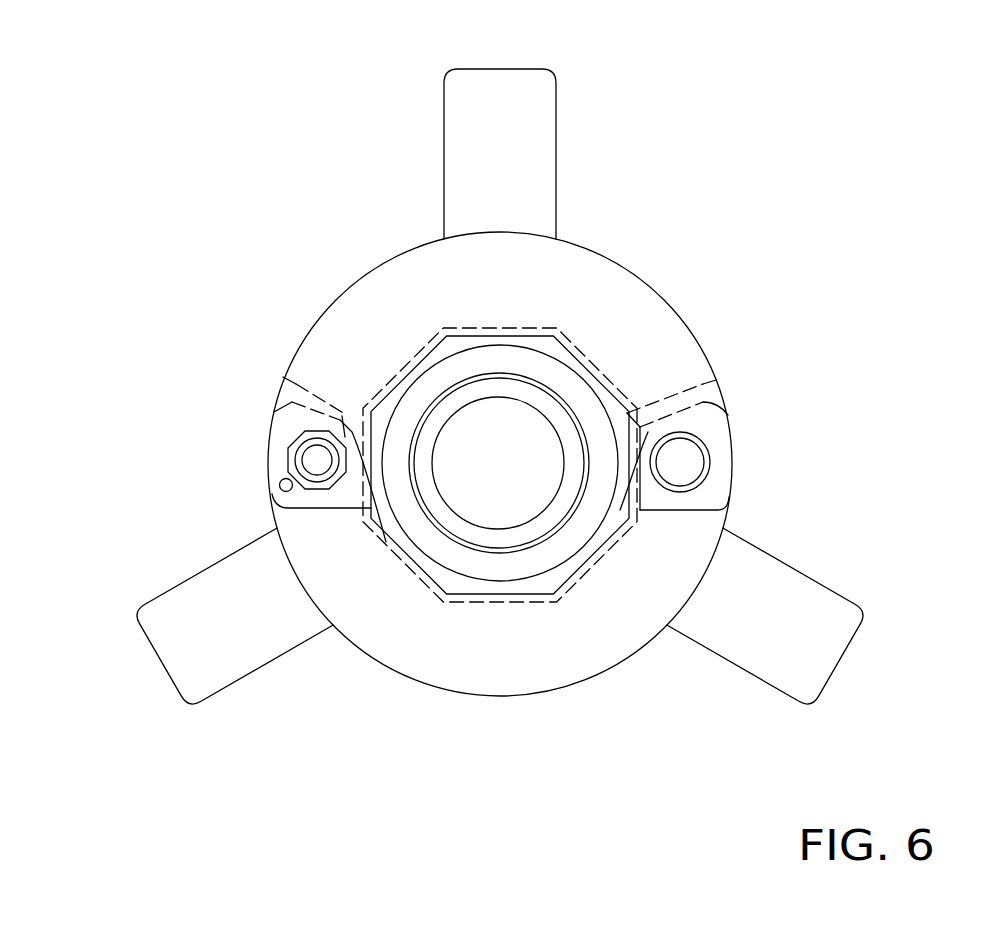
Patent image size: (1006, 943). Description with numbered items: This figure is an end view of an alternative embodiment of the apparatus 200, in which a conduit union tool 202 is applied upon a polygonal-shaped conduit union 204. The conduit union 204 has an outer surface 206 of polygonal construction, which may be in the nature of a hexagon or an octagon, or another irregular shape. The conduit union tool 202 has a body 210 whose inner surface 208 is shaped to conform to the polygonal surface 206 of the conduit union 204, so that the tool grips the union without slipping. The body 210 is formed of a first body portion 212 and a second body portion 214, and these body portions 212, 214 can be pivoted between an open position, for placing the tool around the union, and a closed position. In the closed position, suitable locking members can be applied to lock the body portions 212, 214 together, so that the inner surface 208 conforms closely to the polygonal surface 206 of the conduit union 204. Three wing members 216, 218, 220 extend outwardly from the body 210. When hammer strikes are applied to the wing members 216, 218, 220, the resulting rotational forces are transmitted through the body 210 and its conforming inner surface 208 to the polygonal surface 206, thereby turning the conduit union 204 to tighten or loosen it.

The apparatus 200 is at (793, 153).
The conduit union tool 202 is at (375, 267).
The conduit union 204 is at (560, 383).
The outer surface 206 is at (580, 365).
The inner surface 208 is at (497, 603).
The body 210 is at (375, 628).
The first body portion 212 is at (343, 323).
The second body portion 214 is at (437, 662).
The wing member 216 is at (532, 101).
The wing member 218 is at (823, 635).
The wing member 220 is at (183, 642).